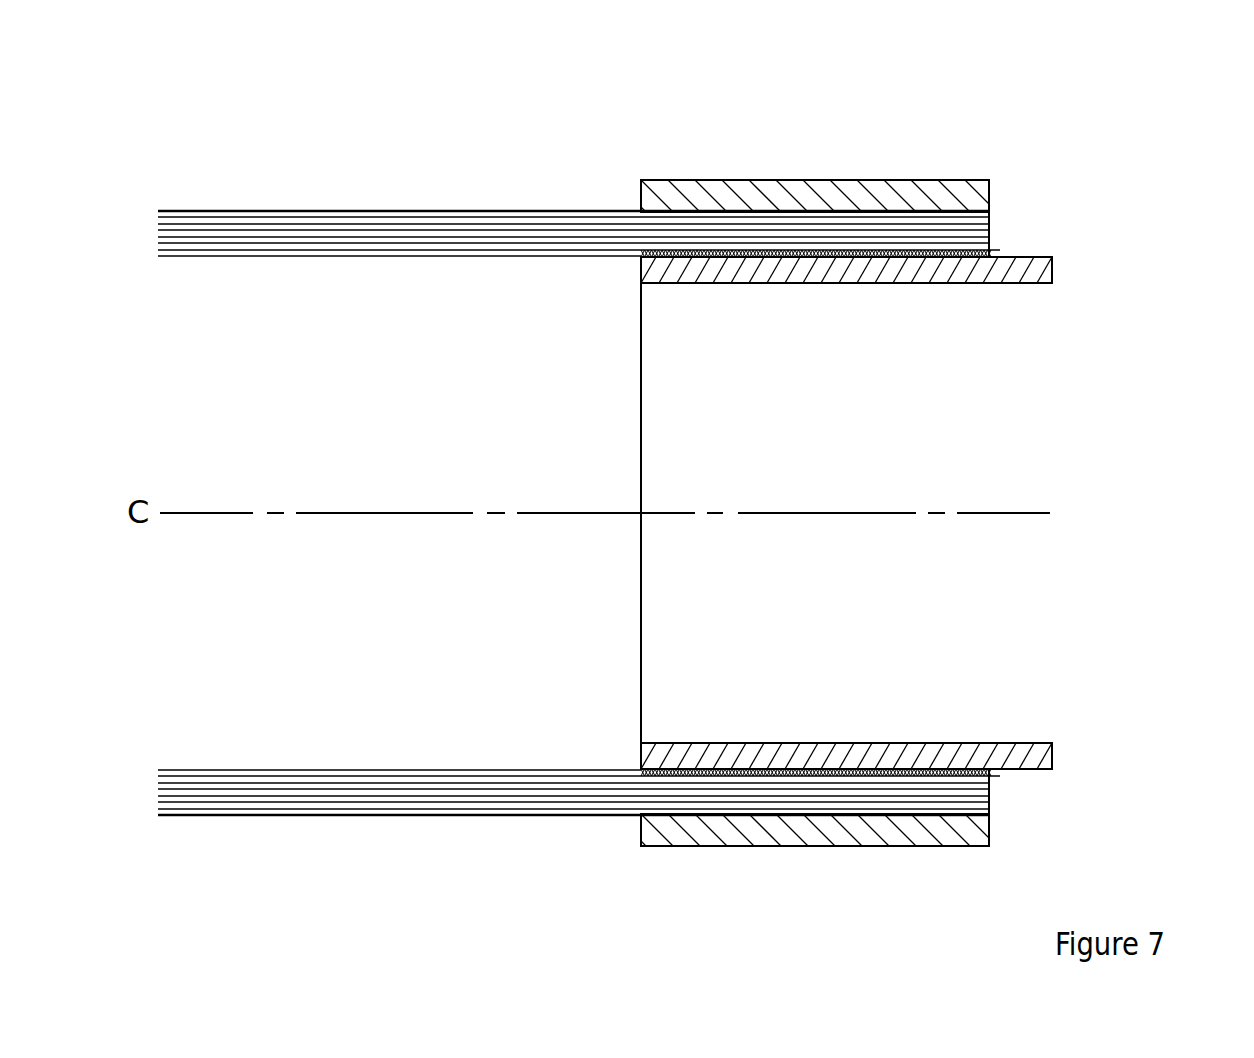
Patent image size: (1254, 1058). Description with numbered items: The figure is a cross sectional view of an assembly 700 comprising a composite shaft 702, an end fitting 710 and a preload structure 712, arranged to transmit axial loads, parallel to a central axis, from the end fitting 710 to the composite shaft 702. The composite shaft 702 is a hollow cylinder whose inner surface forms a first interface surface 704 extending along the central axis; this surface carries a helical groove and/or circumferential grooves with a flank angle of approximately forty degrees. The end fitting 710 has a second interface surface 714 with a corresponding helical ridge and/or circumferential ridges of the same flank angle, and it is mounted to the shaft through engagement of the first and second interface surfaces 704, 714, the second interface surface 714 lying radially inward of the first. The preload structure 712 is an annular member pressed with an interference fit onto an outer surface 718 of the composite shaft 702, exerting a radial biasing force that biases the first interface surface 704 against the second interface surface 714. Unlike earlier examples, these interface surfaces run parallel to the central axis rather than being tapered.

The assembly 700 is at (314, 136).
The composite shaft 702 is at (570, 218).
The first interface surface 704 is at (850, 252).
The end fitting 710 is at (932, 267).
The preload structure 712 is at (943, 205).
The second interface surface 714 is at (780, 258).
The outer surface 718 is at (720, 210).